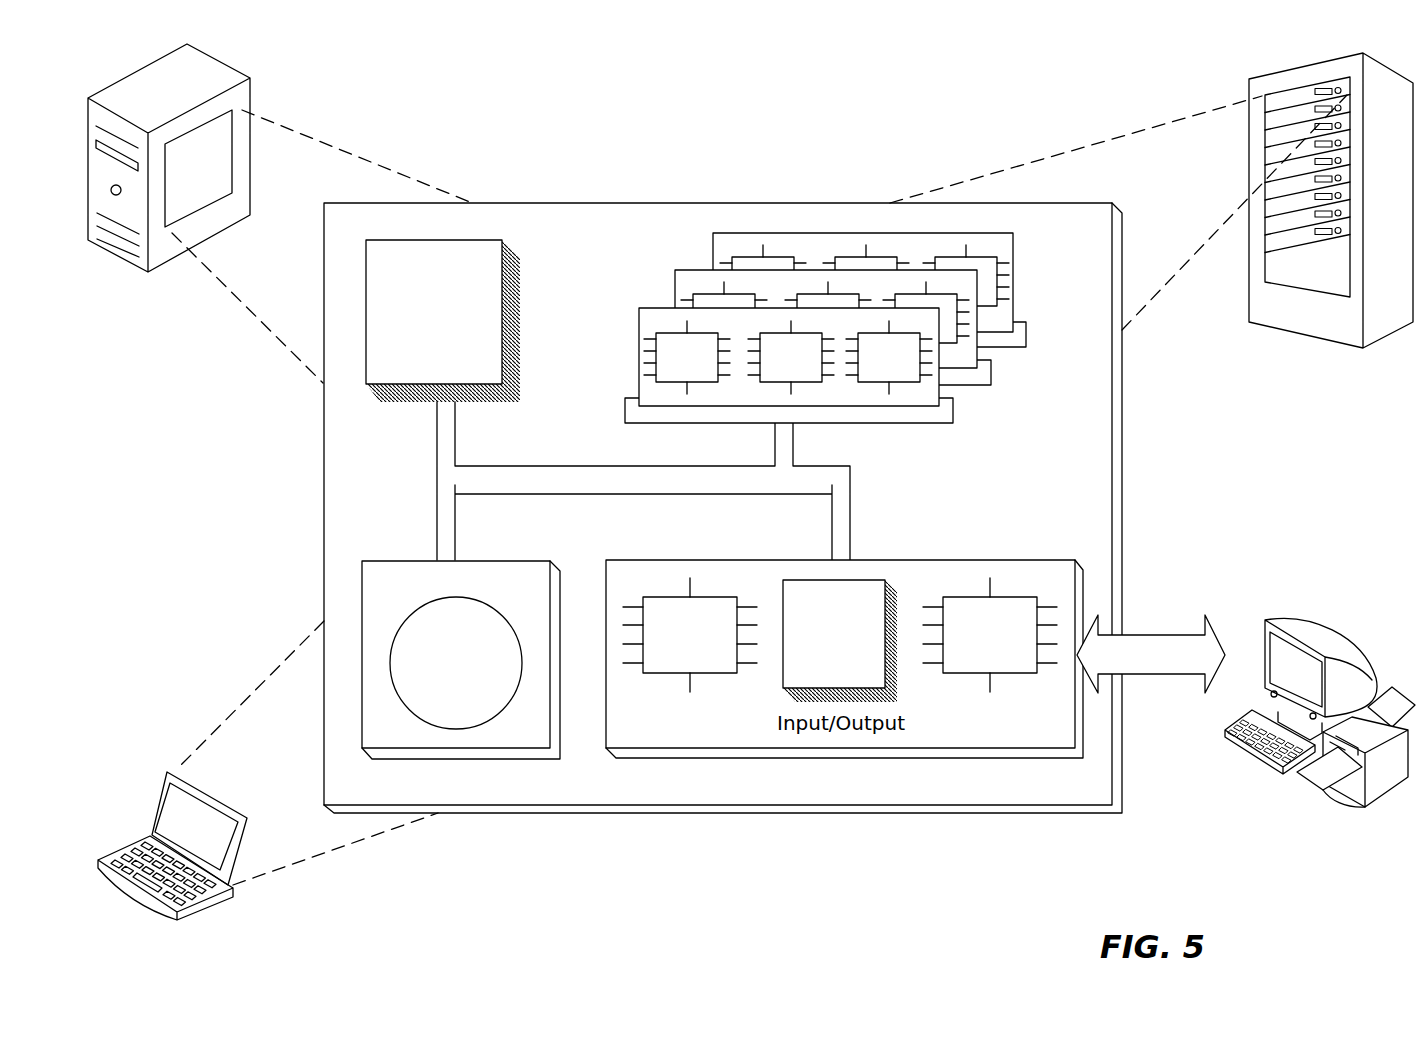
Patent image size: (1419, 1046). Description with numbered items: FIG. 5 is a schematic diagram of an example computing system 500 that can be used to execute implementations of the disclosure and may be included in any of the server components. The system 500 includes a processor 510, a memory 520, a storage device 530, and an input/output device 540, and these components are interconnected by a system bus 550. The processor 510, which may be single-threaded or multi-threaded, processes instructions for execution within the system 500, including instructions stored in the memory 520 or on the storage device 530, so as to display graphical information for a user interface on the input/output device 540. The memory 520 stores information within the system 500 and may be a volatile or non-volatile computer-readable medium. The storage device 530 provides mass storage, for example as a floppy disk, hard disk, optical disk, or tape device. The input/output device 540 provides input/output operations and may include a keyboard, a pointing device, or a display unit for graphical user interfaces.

The computing system 500 is at (535, 122).
The processor 510 is at (492, 377).
The memory 520 is at (1018, 380).
The storage device 530 is at (539, 740).
The input/output device 540 is at (1261, 628).
The system bus 550 is at (638, 486).